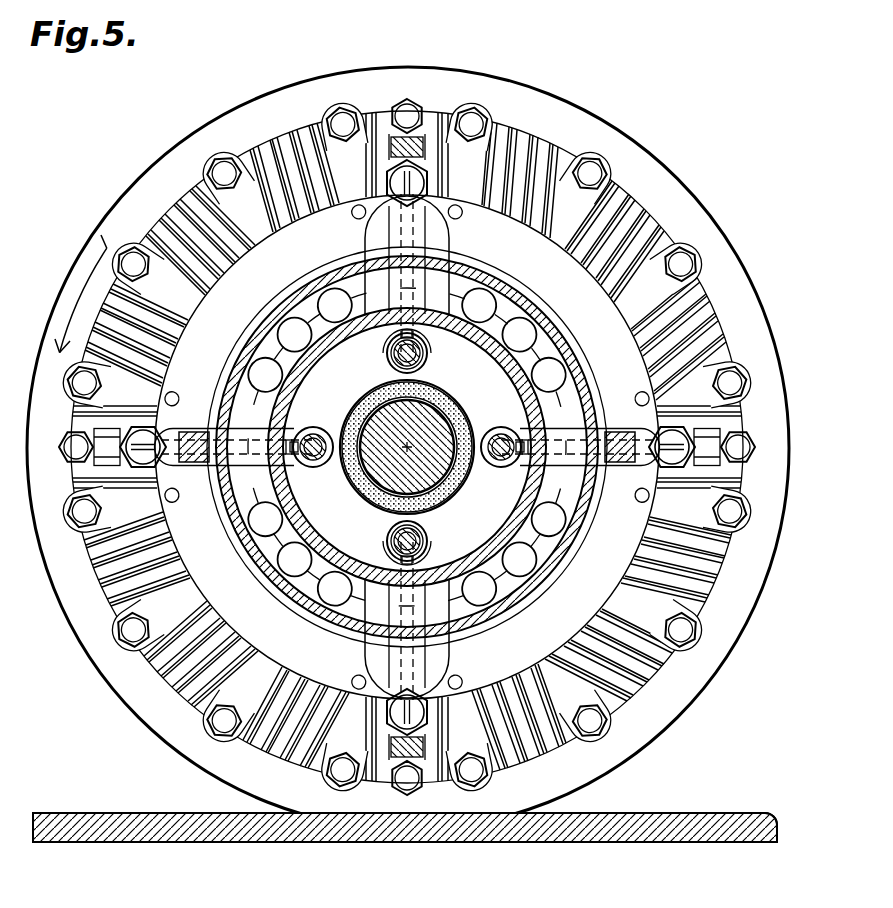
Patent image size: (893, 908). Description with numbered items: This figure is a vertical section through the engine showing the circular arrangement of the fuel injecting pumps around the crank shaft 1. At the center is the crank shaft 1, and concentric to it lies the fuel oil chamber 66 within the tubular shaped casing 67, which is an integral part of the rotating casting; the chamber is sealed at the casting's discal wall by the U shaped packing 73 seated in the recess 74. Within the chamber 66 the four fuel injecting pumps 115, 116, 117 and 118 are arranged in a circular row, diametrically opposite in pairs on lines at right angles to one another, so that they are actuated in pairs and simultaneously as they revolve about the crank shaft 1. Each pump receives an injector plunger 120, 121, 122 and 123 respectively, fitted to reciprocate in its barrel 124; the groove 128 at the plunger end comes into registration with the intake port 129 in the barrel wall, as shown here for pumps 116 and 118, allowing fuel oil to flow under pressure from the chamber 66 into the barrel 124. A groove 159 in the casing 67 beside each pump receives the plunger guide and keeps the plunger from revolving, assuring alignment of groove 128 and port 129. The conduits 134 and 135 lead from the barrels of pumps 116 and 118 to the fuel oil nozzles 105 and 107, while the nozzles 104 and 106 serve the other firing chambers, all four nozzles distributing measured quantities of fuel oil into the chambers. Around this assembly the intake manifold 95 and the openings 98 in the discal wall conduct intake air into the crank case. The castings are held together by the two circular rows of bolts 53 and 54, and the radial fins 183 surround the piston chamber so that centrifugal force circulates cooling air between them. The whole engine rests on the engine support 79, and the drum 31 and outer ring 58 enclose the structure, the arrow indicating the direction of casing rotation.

The crank shaft 1 is at (466, 464).
The brake drum 31 is at (705, 605).
The bolts 53 is at (460, 218).
The bolts 54 is at (603, 176).
The housing ring 58 is at (722, 250).
The fuel oil chamber 66 is at (236, 368).
The tubular shaped casing 67 is at (262, 333).
The U shaped packing 73 is at (466, 498).
The recess 74 is at (462, 508).
The engine support 79 is at (703, 812).
The intake manifold 95 is at (590, 396).
The openings 98 is at (293, 318).
The fuel oil nozzle 104 is at (412, 170).
The fuel oil nozzle 105 is at (172, 435).
The fuel oil nozzle 106 is at (430, 690).
The fuel oil nozzle 107 is at (625, 470).
The fuel injecting pump 115 is at (426, 356).
The fuel injecting pump 116 is at (300, 440).
The fuel injecting pump 117 is at (390, 530).
The fuel injecting pump 118 is at (508, 468).
The injector plunger 120 is at (428, 364).
The injector plunger 121 is at (307, 467).
The injector plunger 122 is at (424, 540).
The injector plunger 123 is at (520, 436).
The barrel 124 is at (392, 366).
The groove 128 is at (322, 430).
The intake port 129 is at (392, 353).
The conduit 134 is at (205, 462).
The conduit 135 is at (615, 433).
The groove 159 is at (402, 300).
The fins 183 is at (662, 680).